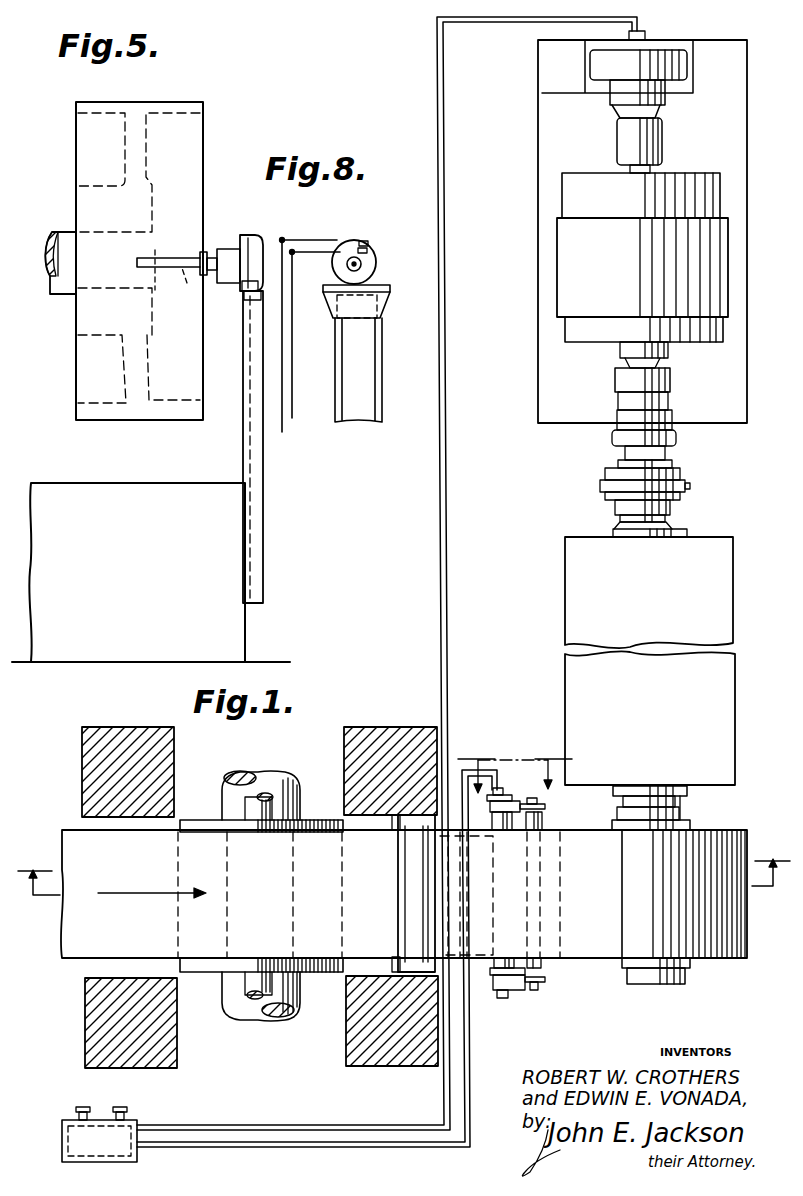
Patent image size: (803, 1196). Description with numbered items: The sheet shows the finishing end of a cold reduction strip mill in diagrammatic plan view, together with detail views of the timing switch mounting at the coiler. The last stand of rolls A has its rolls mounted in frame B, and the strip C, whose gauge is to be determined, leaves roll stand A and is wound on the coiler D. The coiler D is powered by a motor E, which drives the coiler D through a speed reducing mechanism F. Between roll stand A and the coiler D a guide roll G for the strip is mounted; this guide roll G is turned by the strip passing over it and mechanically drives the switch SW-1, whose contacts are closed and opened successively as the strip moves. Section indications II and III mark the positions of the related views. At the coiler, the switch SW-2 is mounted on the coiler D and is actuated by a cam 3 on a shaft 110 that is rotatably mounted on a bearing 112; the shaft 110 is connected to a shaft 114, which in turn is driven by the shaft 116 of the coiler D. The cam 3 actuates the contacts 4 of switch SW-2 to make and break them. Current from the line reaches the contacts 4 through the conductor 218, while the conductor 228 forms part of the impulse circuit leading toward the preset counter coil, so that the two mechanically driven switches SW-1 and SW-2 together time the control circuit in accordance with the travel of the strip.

In FIG. 1, the last stand of rolls A is at (258, 779).
In FIG. 1, the frame B is at (346, 1048).
In FIG. 1, the strip C is at (592, 958).
In FIG. 5, the coiler D is at (203, 149).
In FIG. 1, the coiler D is at (658, 985).
In FIG. 1, the motor E is at (556, 275).
In FIG. 1, the speed reducing mechanism F is at (565, 612).
In FIG. 1, the guide roll G is at (516, 996).
In FIG. 1, the section line II is at (404, 869).
In FIG. 1, the section line III is at (515, 766).
In FIG. 1, the switch SW-1 is at (334, 958).
In FIG. 8, the switch SW-2 is at (351, 237).
In FIG. 8, the cam 3 is at (363, 265).
In FIG. 8, the contacts 4 is at (367, 247).
In FIG. 8, the shaft 110 is at (350, 265).
In FIG. 5, the bearing 112 is at (250, 234).
In FIG. 8, the bearing 112 is at (376, 256).
In FIG. 5, the shaft 114 is at (168, 277).
In FIG. 5, the shaft 116 is at (60, 293).
In FIG. 8, the conductor 218 is at (282, 352).
In FIG. 8, the conductor 228 is at (292, 418).